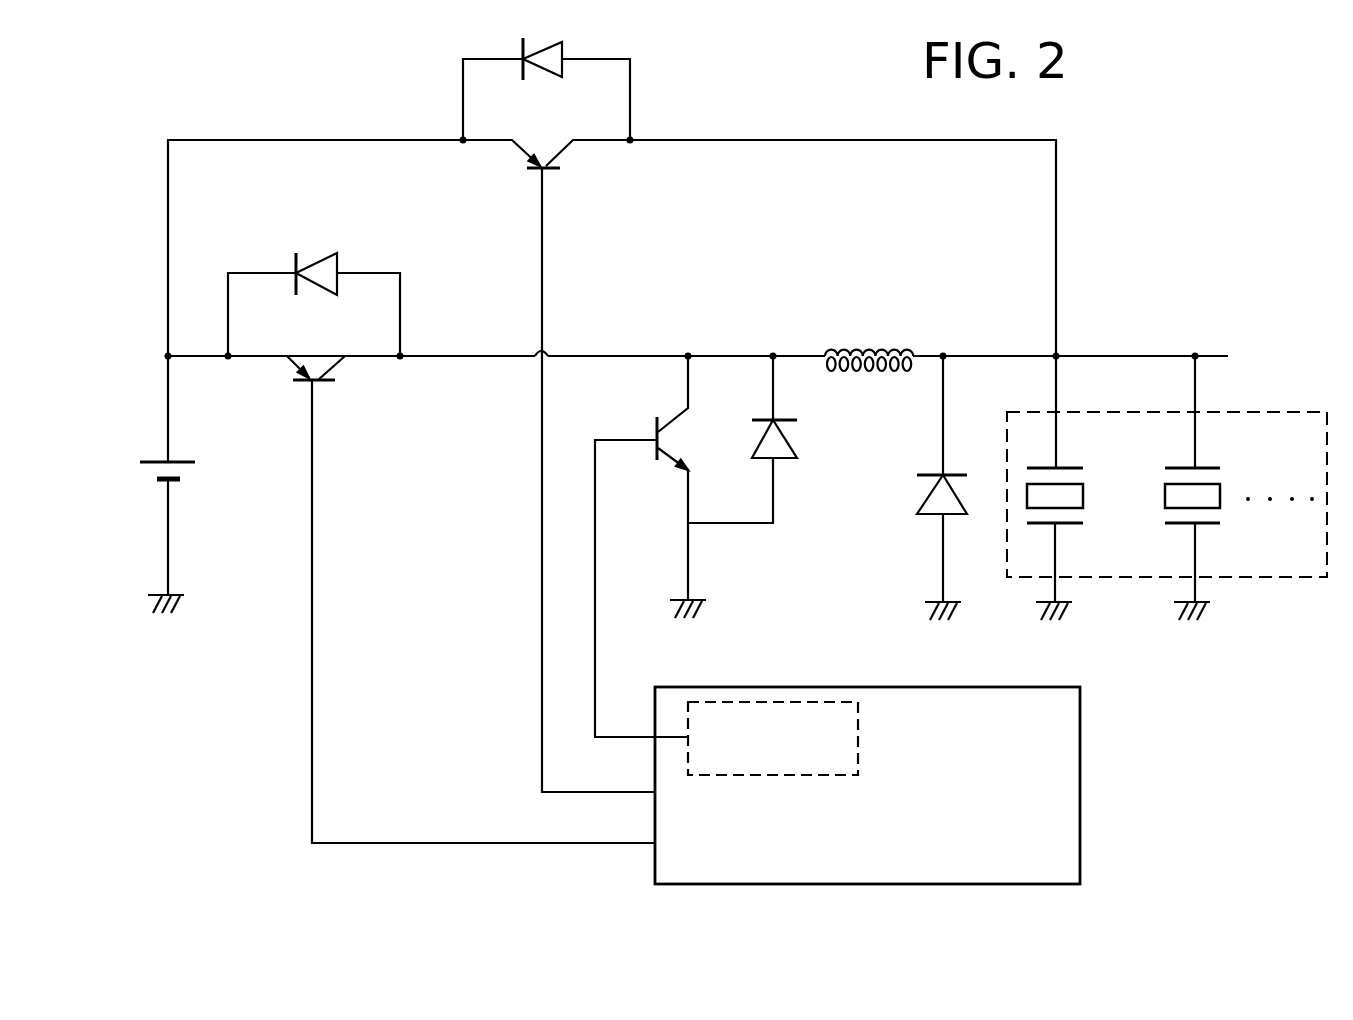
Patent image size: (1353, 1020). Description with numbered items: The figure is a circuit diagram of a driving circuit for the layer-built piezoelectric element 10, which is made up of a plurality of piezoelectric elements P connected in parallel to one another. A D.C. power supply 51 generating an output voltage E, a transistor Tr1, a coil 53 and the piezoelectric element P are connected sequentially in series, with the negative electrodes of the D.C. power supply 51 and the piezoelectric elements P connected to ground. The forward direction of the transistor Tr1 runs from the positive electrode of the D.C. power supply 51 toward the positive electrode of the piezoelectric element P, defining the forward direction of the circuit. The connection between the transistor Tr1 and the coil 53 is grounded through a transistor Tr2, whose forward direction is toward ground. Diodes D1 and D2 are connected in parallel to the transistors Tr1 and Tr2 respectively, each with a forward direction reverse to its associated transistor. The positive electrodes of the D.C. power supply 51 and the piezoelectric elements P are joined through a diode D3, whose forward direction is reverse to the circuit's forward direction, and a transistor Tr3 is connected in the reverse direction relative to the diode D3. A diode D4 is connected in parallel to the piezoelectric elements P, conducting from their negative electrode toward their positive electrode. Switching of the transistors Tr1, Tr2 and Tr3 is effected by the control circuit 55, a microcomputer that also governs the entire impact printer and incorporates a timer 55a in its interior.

The D.C. power supply 51 is at (152, 470).
The coil 53 is at (877, 350).
The piezoelectric element 10 is at (1267, 427).
The control circuit 55 is at (1065, 725).
The timer 55a is at (783, 717).
The diode D1 is at (314, 290).
The diode D2 is at (761, 439).
The diode D3 is at (546, 74).
The diode D4 is at (924, 488).
The transistor Tr1 is at (314, 374).
The transistor Tr2 is at (666, 487).
The transistor Tr3 is at (546, 158).